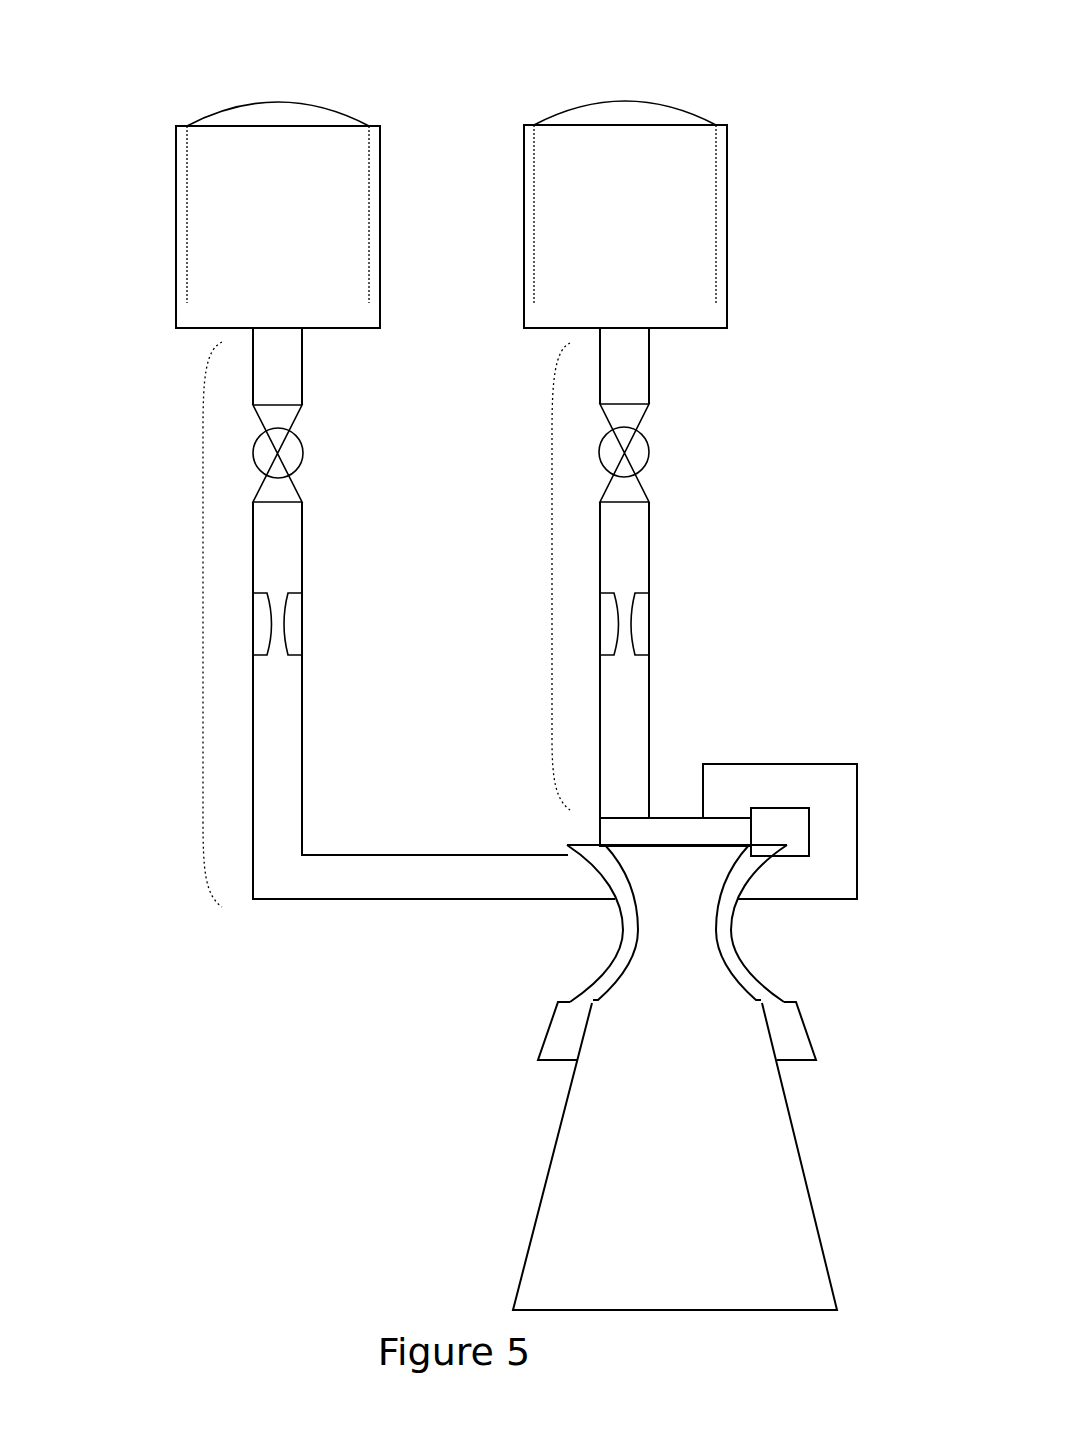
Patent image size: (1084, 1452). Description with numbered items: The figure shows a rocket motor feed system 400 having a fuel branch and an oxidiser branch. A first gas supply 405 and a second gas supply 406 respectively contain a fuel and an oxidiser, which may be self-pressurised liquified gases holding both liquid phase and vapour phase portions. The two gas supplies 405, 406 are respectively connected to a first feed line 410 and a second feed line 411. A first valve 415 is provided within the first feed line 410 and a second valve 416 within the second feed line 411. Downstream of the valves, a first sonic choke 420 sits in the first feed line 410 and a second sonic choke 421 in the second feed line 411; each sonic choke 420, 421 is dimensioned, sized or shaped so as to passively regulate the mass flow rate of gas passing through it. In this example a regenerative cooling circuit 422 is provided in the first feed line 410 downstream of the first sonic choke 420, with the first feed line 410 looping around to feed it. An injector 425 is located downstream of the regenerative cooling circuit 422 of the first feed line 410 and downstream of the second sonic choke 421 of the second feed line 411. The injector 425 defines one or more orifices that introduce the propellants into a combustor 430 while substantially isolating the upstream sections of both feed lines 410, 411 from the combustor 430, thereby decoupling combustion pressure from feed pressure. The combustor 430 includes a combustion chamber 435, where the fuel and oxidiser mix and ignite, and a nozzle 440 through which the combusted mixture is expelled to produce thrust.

The rocket motor feed system 400 is at (867, 506).
The first gas supply 405 is at (237, 127).
The second gas supply 406 is at (689, 126).
The first feed line 410 is at (335, 617).
The second feed line 411 is at (594, 573).
The first valve 415 is at (303, 438).
The second valve 416 is at (660, 445).
The first sonic choke 420 is at (292, 622).
The second sonic choke 421 is at (642, 622).
The regenerative cooling circuit 422 is at (570, 1032).
The injector 425 is at (678, 812).
The combustor 430 is at (630, 1037).
The combustion chamber 435 is at (683, 961).
The nozzle 440 is at (765, 1203).